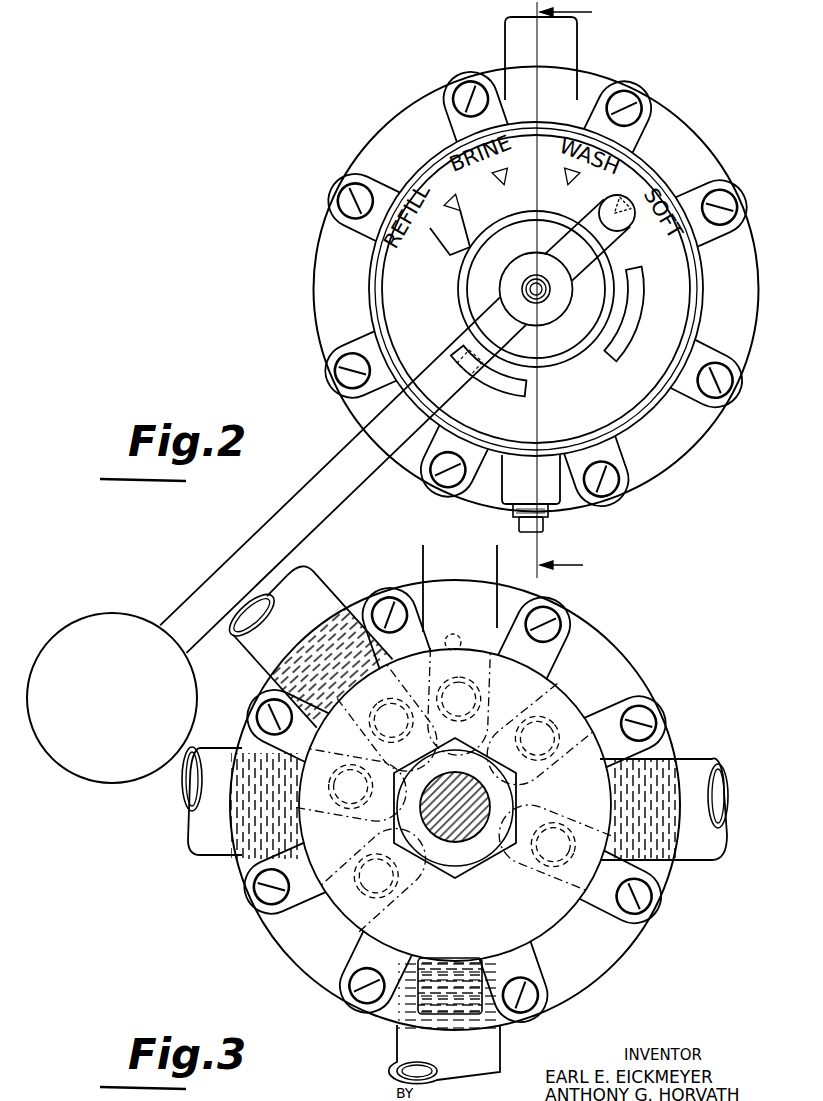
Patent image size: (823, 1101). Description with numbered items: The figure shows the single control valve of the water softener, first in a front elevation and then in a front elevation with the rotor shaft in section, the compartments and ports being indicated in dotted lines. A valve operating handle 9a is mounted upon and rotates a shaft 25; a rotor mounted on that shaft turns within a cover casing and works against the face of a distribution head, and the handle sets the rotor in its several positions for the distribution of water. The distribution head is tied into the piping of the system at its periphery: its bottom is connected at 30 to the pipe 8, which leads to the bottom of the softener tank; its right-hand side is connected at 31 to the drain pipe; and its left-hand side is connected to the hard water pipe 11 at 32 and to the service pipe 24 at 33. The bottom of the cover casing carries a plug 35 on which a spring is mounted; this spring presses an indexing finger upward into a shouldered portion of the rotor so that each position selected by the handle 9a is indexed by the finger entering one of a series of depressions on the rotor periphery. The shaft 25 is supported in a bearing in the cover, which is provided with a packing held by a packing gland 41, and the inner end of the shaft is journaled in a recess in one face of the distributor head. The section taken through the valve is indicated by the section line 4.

In FIG. 2, the section line 4- 4 is at (571, 290).
In FIG. 3, the pipe 8 is at (410, 1048).
In FIG. 2, the valve operating handle 9a is at (230, 564).
In FIG. 3, the hard water pipe 11 is at (322, 598).
In FIG. 3, the service pipe 24 is at (211, 756).
In FIG. 2, the shaft 25 is at (508, 296).
In FIG. 3, the shaft 25 is at (486, 804).
In FIG. 3, the connection 30 is at (493, 1022).
In FIG. 3, the connection 31 is at (670, 751).
In FIG. 3, the connection 32 is at (345, 612).
In FIG. 3, the connection 33 is at (240, 856).
In FIG. 2, the plug 35 is at (553, 512).
In FIG. 2, the packing gland 41 is at (581, 352).
In FIG. 3, the packing gland 41 is at (448, 878).